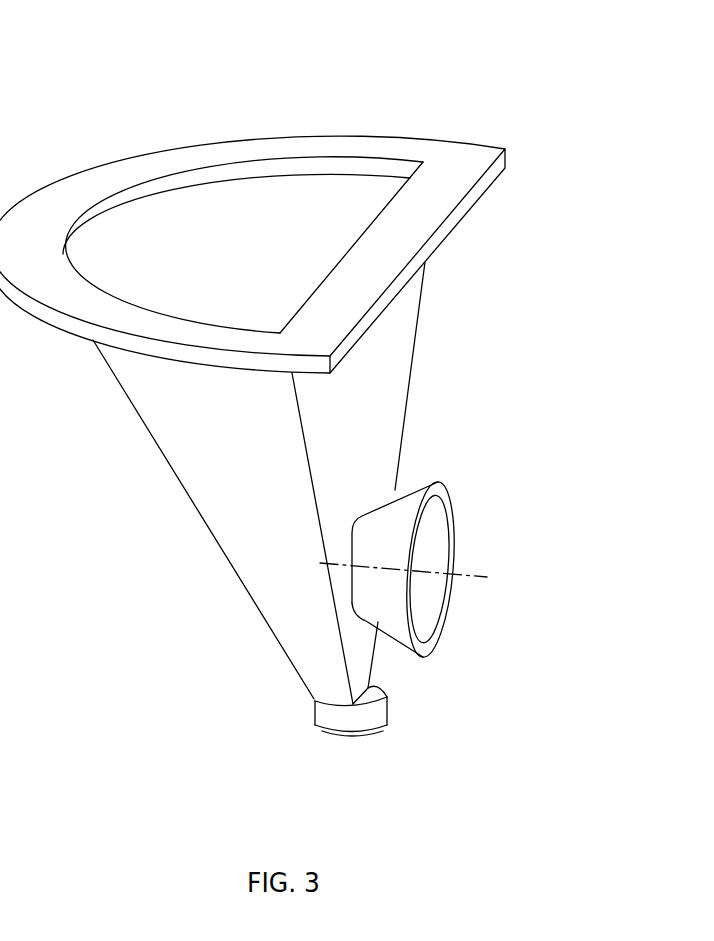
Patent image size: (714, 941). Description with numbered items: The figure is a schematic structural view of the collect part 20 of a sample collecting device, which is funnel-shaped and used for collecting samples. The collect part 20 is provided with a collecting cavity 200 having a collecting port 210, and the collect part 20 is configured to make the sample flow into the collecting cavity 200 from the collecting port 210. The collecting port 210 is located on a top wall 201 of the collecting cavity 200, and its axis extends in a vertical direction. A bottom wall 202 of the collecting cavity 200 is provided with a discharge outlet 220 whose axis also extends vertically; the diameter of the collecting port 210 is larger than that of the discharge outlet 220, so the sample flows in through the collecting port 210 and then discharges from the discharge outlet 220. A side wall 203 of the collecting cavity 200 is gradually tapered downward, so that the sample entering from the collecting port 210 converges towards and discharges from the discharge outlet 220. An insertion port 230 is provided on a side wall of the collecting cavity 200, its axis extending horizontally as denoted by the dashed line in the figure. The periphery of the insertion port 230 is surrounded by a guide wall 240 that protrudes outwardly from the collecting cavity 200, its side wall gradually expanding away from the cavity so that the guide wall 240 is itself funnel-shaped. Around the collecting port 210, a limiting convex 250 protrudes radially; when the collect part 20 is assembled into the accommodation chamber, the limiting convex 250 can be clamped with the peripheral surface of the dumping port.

The collect part 20 is at (386, 45).
The collecting cavity 200 is at (303, 247).
The top wall 201 is at (170, 167).
The bottom wall 202 is at (325, 735).
The side wall 203 is at (223, 493).
The collecting port 210 is at (272, 298).
The discharge outlet 220 is at (327, 735).
The insertion port 230 is at (422, 608).
The guide wall 240 is at (400, 535).
The limiting convex 250 is at (348, 307).